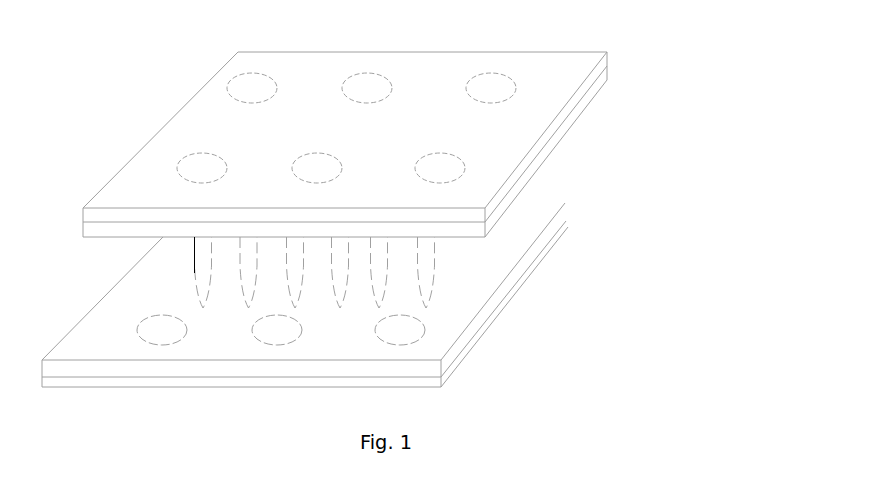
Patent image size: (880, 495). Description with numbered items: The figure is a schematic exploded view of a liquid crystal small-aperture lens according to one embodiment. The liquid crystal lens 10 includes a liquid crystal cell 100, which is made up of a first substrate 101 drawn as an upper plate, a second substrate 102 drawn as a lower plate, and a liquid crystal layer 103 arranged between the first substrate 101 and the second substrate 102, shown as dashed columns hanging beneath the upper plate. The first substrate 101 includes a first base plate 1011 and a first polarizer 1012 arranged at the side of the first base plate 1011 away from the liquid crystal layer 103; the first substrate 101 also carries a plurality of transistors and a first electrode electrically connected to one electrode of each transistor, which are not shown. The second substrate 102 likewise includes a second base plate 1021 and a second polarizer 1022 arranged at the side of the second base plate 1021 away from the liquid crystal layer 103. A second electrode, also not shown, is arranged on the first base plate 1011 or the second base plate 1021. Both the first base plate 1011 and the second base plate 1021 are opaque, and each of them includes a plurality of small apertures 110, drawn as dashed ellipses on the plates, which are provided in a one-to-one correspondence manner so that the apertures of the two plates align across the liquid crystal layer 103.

The liquid crystal lens 10 is at (377, 28).
The liquid crystal cell 100 is at (740, 137).
The first substrate 101 is at (697, 121).
The first polarizer 1012 is at (554, 125).
The first base plate 1011 is at (548, 153).
The small apertures 110 is at (503, 87).
The liquid crystal layer 103 is at (427, 251).
The second substrate 102 is at (697, 305).
The second base plate 1021 is at (491, 308).
The second polarizer 1022 is at (368, 307).